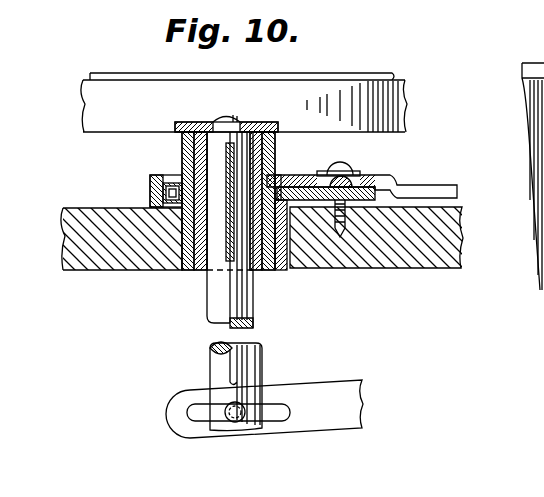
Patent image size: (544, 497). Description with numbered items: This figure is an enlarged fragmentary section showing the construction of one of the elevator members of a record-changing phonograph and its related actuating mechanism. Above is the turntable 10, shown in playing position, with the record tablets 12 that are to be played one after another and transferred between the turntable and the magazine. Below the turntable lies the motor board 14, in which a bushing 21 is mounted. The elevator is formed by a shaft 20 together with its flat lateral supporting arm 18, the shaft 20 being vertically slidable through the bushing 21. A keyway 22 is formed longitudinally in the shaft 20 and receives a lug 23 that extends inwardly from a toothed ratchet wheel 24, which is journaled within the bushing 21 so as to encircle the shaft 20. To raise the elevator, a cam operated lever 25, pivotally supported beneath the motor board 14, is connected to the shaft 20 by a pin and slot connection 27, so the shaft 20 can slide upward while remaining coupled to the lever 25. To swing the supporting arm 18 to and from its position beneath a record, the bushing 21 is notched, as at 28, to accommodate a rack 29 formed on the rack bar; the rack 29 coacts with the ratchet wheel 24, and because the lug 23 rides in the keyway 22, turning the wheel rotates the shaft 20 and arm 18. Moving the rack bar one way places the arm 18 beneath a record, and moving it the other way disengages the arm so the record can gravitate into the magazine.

The turntable 10 is at (410, 101).
The record tablets 12 is at (395, 74).
The motor board 14 is at (461, 238).
The supporting arm 18 is at (185, 122).
The shaft 20 is at (258, 122).
The bushing 21 is at (184, 270).
The keyway 22 is at (258, 312).
The lug 23 is at (230, 240).
The ratchet wheel 24 is at (178, 181).
The cam operated lever 25 is at (325, 418).
The pin and slot connection 27 is at (232, 424).
The notch 28 is at (315, 180).
The rack 29 is at (291, 186).